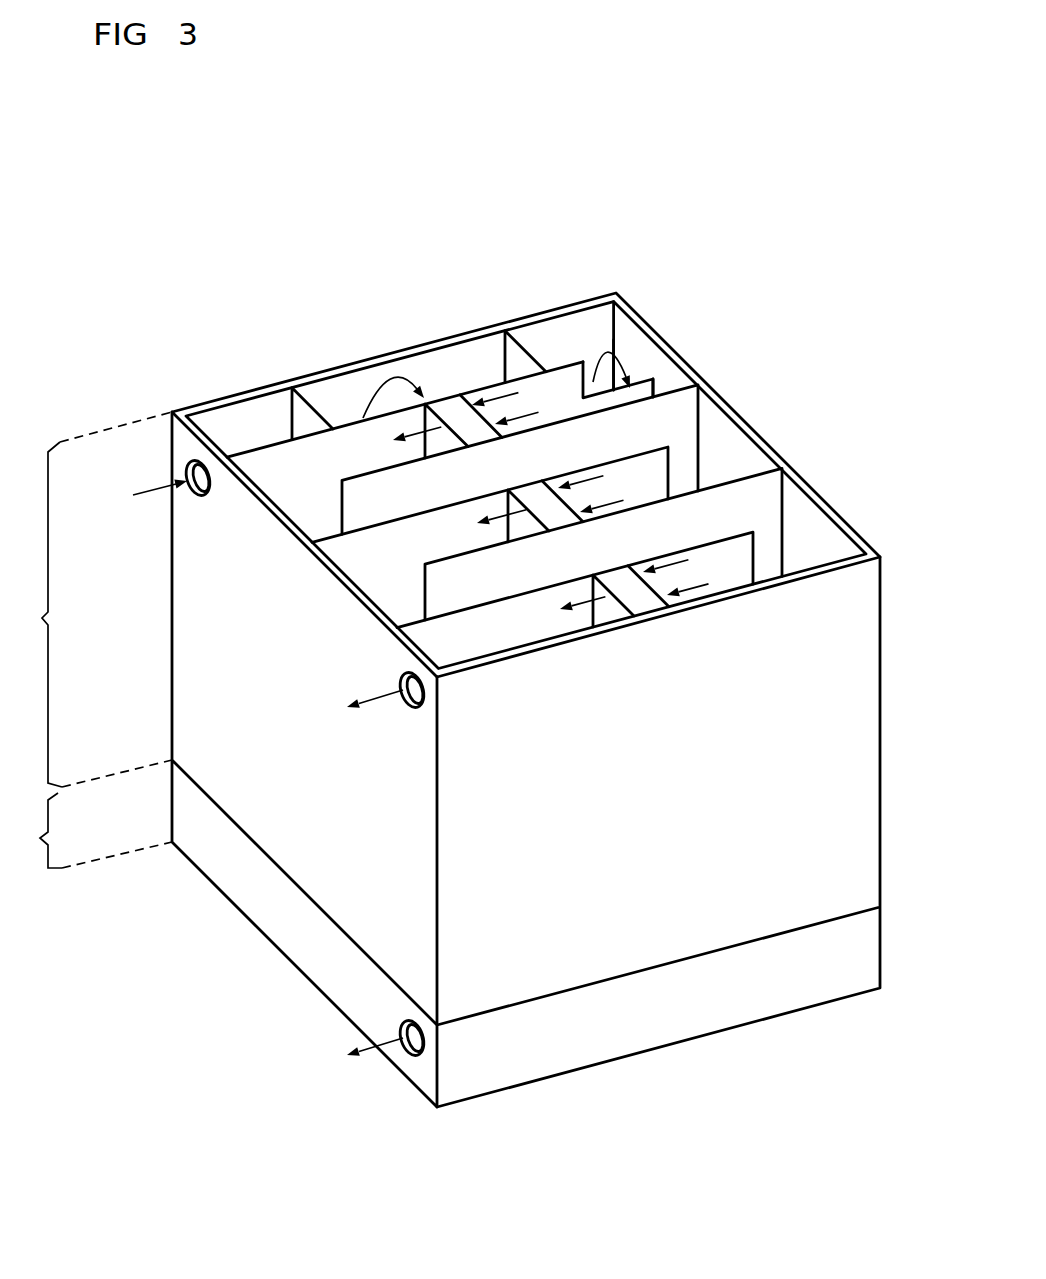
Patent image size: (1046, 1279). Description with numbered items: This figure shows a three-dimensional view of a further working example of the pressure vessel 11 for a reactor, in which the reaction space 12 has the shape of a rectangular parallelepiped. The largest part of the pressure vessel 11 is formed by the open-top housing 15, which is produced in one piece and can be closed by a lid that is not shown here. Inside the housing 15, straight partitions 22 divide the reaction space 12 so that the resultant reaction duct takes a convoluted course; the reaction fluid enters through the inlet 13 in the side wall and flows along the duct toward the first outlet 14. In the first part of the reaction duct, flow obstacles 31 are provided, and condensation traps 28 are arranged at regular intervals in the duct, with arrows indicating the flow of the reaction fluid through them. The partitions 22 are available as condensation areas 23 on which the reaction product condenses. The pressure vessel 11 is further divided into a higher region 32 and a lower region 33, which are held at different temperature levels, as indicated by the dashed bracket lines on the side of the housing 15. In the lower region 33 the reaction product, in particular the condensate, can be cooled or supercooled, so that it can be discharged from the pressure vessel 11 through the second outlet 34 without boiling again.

The pressure vessel 11 is at (853, 520).
The reaction space 12 is at (712, 436).
The inlet 13 is at (189, 488).
The first outlet 14 is at (405, 708).
The housing 15 is at (866, 593).
The partition 22 is at (677, 388).
The condensation area 23 is at (760, 504).
The condensation trap 28 is at (452, 410).
The flow obstacle 31 is at (538, 370).
The higher region 32 is at (90, 599).
The lower region 33 is at (90, 830).
The second outlet 34 is at (405, 1056).